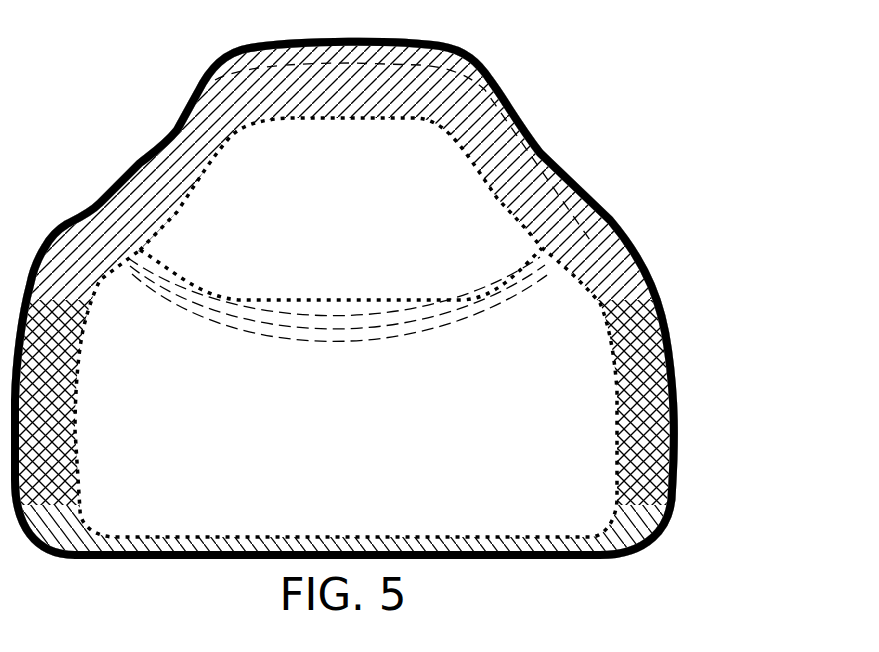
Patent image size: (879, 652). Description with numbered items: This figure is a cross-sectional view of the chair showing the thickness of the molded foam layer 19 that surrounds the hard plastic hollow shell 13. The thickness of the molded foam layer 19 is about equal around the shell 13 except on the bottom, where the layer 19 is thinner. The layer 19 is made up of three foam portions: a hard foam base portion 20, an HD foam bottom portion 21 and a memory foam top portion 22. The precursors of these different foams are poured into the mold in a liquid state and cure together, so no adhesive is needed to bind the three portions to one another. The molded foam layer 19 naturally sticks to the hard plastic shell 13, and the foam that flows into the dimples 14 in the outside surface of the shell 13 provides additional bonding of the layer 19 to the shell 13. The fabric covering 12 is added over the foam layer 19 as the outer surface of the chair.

The fabric covering 12 is at (674, 392).
The hollow shell 13 is at (576, 479).
The dimples 14 is at (619, 424).
The molded foam layer 19 is at (577, 208).
The hard foam base portion 20 is at (656, 536).
The HD foam bottom portion 21 is at (650, 323).
The memory foam top portion 22 is at (650, 294).